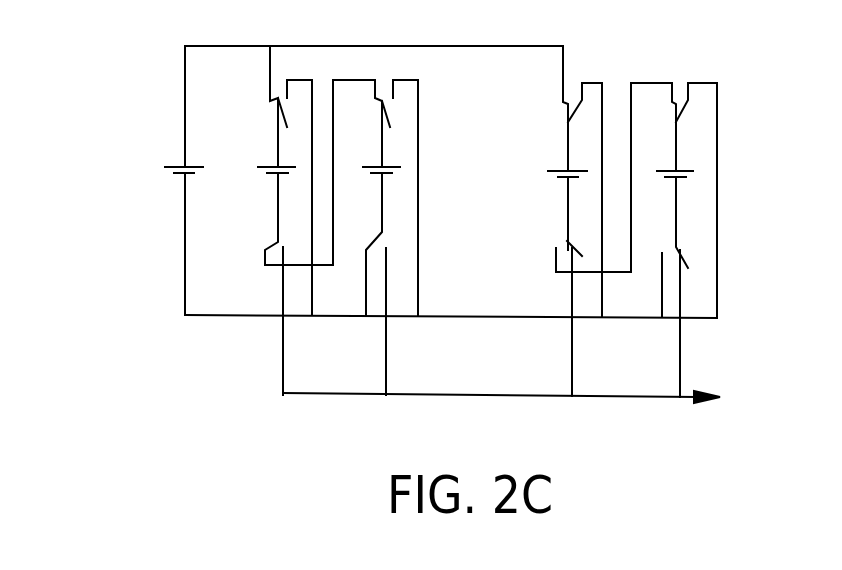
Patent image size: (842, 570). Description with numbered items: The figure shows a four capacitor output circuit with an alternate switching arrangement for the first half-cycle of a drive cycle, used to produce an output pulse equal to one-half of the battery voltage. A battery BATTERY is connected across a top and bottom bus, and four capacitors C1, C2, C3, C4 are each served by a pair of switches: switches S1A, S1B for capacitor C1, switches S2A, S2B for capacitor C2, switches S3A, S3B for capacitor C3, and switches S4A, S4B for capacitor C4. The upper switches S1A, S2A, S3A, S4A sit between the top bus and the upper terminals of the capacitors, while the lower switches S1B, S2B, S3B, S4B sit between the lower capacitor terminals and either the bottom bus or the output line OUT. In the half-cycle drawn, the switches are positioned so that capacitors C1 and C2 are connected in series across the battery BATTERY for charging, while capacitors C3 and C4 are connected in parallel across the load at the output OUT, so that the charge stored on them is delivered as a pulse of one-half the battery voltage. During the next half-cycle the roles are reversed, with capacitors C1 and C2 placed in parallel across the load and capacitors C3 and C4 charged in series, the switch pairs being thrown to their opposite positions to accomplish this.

The battery BATTERY is at (130, 180).
The switch S1A is at (263, 106).
The switch S1B is at (293, 237).
The switch S2A is at (403, 108).
The switch S2B is at (419, 292).
The switch S3A is at (552, 108).
The switch S3B is at (587, 239).
The switch S4A is at (701, 113).
The switch S4B is at (718, 296).
The capacitor C1 is at (266, 164).
The capacitor C2 is at (371, 164).
The capacitor C3 is at (557, 169).
The capacitor C4 is at (665, 169).
The output terminal OUT is at (501, 417).